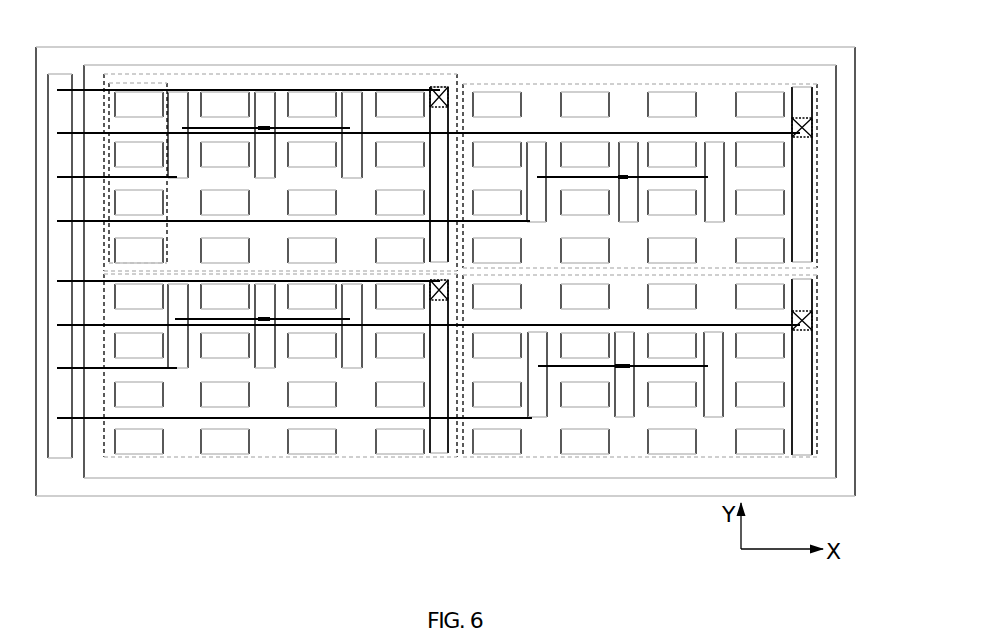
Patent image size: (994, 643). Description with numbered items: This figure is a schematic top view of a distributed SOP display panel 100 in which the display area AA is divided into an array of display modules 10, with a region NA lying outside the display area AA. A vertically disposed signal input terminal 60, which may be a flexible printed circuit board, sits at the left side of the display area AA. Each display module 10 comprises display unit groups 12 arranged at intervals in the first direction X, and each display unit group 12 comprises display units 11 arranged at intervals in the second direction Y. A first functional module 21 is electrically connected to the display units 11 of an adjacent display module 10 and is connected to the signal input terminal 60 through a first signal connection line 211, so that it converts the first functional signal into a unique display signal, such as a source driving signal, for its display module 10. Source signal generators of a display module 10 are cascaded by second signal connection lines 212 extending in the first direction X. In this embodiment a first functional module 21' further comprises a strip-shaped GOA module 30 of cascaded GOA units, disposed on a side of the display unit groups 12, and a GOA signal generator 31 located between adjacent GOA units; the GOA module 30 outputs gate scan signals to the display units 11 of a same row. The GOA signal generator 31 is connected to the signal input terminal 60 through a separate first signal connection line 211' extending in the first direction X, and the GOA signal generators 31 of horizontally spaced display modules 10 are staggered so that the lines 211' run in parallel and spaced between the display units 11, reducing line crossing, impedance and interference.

The distributed SOP display panel 100 is at (493, 47).
The display module 10 is at (205, 65).
The signal input terminal 60 is at (58, 443).
The display unit group 12 is at (137, 83).
The display unit 11 is at (388, 102).
The first functional module 21 is at (446, 213).
The first functional module 21' is at (621, 328).
The GOA module 30 is at (440, 427).
The GOA signal generator 31 is at (829, 20).
The first signal connection line 211 is at (294, 330).
The first signal connection line 211' is at (428, 166).
The second signal connection line 212 is at (553, 367).
The display area AA is at (283, 467).
The non-active area NA is at (356, 485).